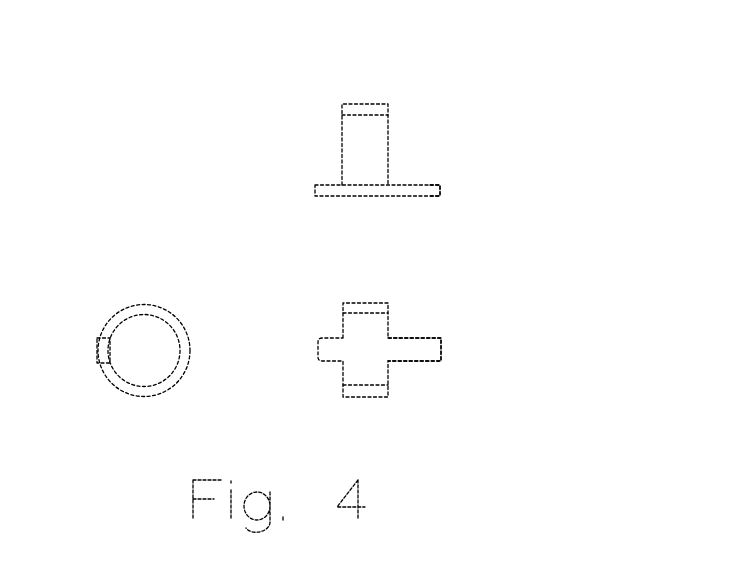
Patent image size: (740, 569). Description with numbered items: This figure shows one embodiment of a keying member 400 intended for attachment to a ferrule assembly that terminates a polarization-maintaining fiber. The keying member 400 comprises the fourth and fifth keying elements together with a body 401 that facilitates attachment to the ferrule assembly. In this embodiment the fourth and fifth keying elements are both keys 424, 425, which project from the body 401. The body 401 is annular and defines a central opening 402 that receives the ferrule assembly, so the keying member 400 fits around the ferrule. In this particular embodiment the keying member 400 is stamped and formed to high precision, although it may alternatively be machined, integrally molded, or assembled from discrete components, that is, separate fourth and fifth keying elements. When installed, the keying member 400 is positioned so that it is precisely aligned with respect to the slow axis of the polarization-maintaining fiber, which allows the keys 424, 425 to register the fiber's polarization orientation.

The keying member 400 is at (447, 78).
The body 401 is at (385, 160).
The central opening 402 is at (141, 330).
The key 424 is at (323, 156).
The key 425 is at (512, 171).